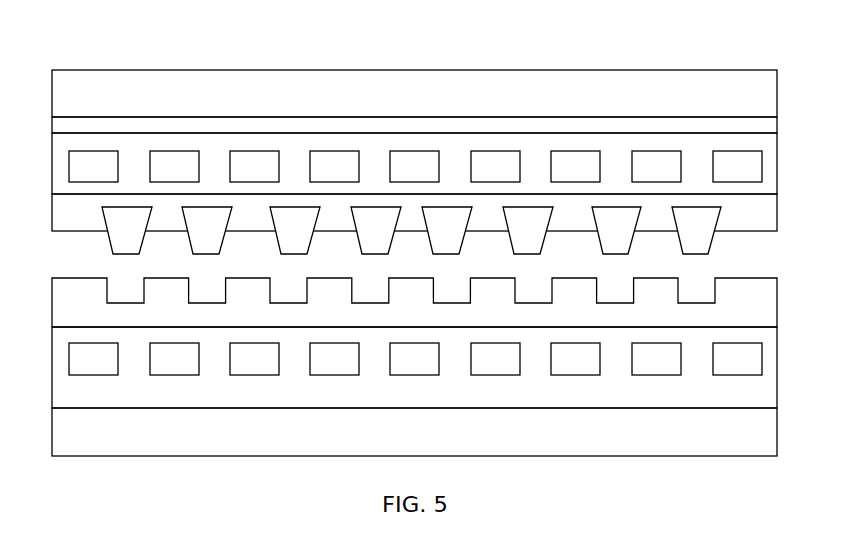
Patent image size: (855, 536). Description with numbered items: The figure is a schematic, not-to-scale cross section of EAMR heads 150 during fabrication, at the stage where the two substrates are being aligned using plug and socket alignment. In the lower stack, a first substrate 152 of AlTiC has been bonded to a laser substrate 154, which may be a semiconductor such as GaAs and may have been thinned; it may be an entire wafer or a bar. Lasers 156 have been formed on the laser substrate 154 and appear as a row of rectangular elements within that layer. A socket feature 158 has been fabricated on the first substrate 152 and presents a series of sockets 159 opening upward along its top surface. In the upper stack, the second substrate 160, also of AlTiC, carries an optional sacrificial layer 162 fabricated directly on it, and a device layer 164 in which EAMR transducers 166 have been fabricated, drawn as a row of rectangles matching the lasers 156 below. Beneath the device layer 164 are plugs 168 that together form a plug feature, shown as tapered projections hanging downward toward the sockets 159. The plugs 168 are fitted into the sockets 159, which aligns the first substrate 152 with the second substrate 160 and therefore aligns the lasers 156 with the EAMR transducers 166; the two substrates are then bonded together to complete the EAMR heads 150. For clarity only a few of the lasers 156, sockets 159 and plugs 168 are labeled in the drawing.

The EAMR heads 150 is at (395, 17).
The first substrate 152 is at (535, 456).
The laser substrate 154 is at (52, 390).
The lasers 156 is at (802, 391).
The socket feature 158 is at (52, 306).
The sockets 159 is at (610, 278).
The second substrate 160 is at (158, 70).
The sacrificial layer 162 is at (110, 117).
The device layer 164 is at (52, 178).
The EAMR transducers 166 is at (802, 133).
The plugs 168 is at (802, 190).